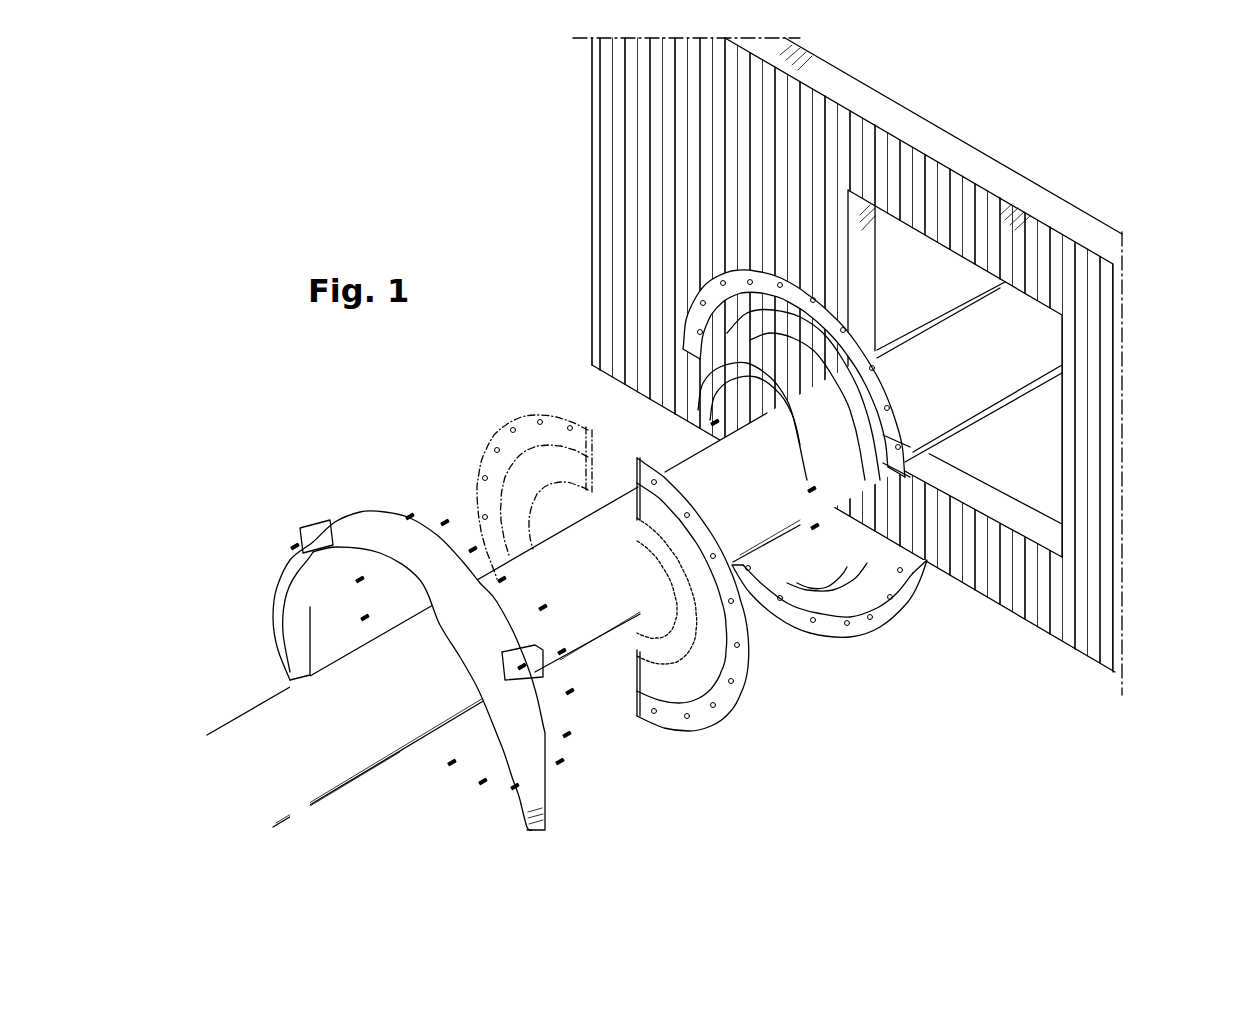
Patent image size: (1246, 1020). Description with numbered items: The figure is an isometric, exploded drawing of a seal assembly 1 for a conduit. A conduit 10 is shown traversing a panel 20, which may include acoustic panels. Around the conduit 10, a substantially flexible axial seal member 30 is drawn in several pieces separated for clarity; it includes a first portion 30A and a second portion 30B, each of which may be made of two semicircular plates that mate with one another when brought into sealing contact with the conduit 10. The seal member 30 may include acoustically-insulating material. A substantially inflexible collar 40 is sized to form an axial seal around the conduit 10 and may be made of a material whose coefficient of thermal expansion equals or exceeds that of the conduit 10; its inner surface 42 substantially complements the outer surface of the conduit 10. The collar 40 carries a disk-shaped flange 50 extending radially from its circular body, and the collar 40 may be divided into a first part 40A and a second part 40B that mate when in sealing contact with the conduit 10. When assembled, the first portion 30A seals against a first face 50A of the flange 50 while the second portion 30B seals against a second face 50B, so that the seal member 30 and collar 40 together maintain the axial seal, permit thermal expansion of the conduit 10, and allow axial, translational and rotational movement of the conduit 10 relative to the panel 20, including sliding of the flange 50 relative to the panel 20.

The seal assembly 1 is at (1065, 145).
The conduit 10 is at (300, 762).
The panel 20 is at (912, 130).
The axial seal member 30 is at (545, 420).
The seal member first portion 30A is at (950, 580).
The seal member second portion 30B is at (700, 700).
The collar 40 is at (835, 533).
The collar first part 40A is at (800, 443).
The collar second part 40B is at (817, 548).
The inner surface of collar 42 is at (767, 427).
The flange 50 is at (810, 419).
The first face of flange 50A is at (692, 300).
The second face of flange 50B is at (820, 553).